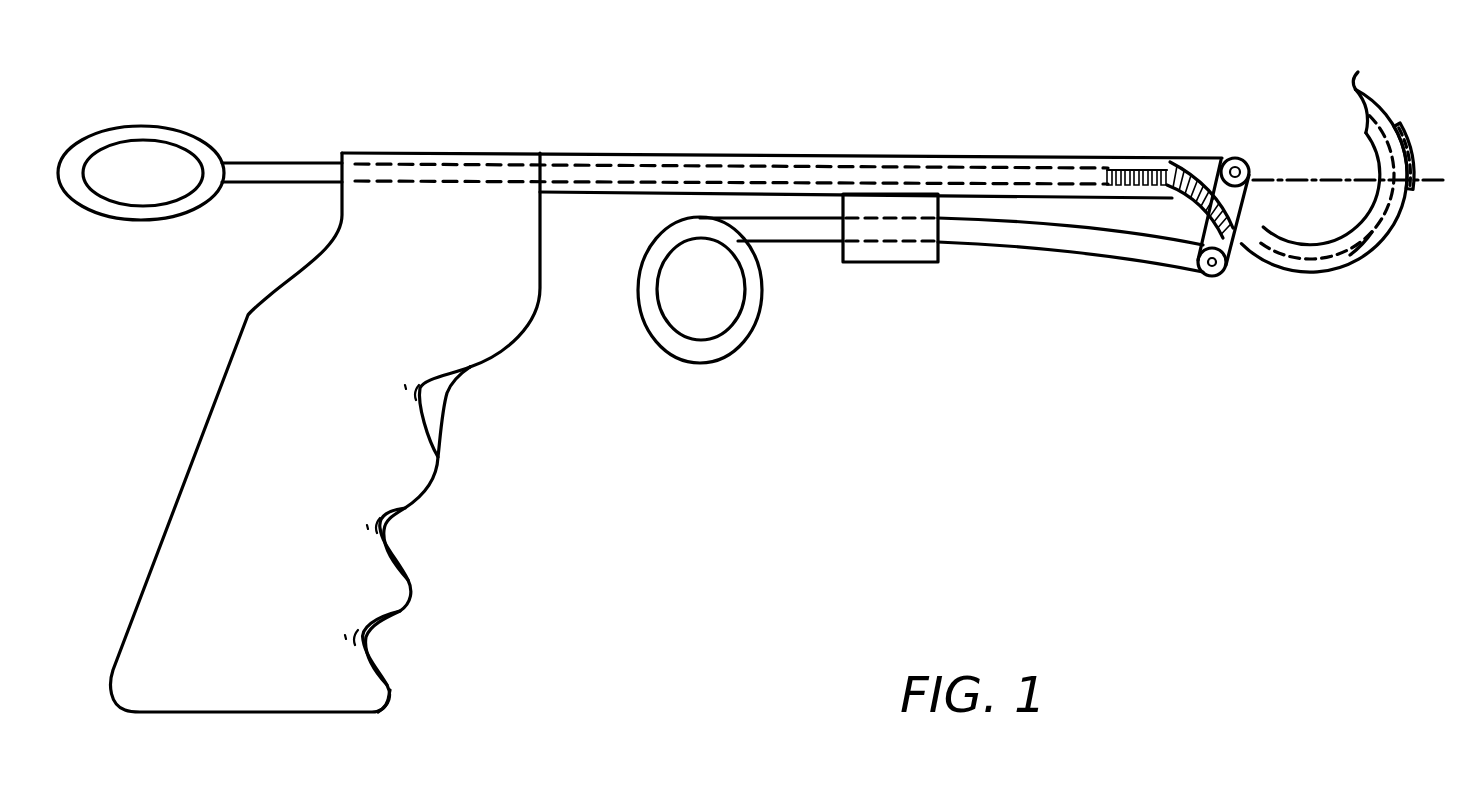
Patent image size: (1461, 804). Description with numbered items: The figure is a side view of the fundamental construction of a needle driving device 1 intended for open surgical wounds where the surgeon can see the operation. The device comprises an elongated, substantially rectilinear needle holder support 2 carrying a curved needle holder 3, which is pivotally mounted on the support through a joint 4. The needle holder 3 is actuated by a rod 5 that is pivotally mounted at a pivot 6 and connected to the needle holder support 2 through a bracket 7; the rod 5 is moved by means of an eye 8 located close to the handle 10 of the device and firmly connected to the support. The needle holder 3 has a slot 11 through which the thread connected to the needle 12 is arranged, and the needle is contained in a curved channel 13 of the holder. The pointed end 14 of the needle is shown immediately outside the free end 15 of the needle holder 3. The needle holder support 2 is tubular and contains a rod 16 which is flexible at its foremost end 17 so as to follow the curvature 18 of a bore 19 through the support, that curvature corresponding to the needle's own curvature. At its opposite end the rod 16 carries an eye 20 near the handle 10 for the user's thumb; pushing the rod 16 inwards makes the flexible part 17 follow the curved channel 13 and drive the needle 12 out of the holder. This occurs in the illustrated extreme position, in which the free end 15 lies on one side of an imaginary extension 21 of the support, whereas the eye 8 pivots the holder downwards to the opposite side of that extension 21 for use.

The needle driving device 1 is at (452, 124).
The needle holder support 2 is at (770, 153).
The needle holder 3 is at (1290, 270).
The joint 4 is at (1234, 158).
The rod 5 is at (1053, 235).
The pivot 6 is at (1212, 272).
The bracket 7 is at (870, 250).
The eye 8 is at (647, 320).
The handle 10 is at (367, 578).
The slot 11 is at (1282, 233).
The needle 12 is at (1370, 107).
The curved channel 13 is at (1372, 232).
The pointed end 14 is at (1358, 72).
The free end 15 is at (1368, 128).
The rod 16 is at (268, 162).
The foremost end 17 is at (1168, 160).
The curvature 18 is at (1178, 200).
The bore 19 is at (608, 163).
The eye 20 is at (143, 213).
The imaginary extension 21 is at (1410, 188).